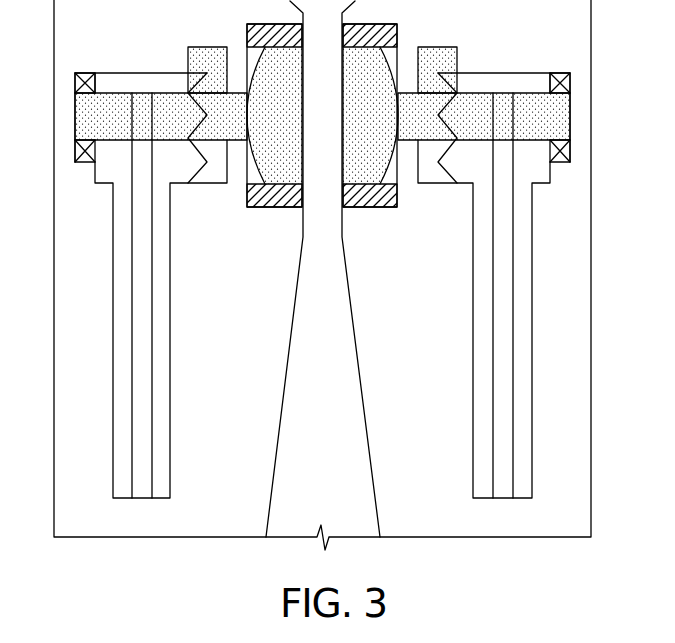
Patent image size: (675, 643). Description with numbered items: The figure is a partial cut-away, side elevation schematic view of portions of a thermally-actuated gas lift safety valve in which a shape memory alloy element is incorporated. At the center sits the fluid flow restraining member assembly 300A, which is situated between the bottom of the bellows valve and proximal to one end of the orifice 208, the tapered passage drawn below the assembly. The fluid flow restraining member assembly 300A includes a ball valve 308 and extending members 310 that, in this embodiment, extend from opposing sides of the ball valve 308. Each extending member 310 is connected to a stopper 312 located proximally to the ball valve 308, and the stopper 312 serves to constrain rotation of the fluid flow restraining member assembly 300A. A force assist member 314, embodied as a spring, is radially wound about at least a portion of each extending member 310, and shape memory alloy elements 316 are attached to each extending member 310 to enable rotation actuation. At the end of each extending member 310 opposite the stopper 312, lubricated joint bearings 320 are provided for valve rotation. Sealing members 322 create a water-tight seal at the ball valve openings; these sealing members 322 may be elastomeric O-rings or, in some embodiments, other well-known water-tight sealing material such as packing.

The orifice 208 is at (300, 363).
The fluid flow restraining member assembly 300A is at (483, 48).
The ball valve 308 is at (357, 162).
The extending member 310 is at (75, 110).
The stopper 312 is at (207, 47).
The force assist member 314 is at (203, 158).
The shape memory alloy element 316 is at (132, 110).
The lubricated joint bearing 320 is at (560, 73).
The sealing member 322 is at (373, 24).